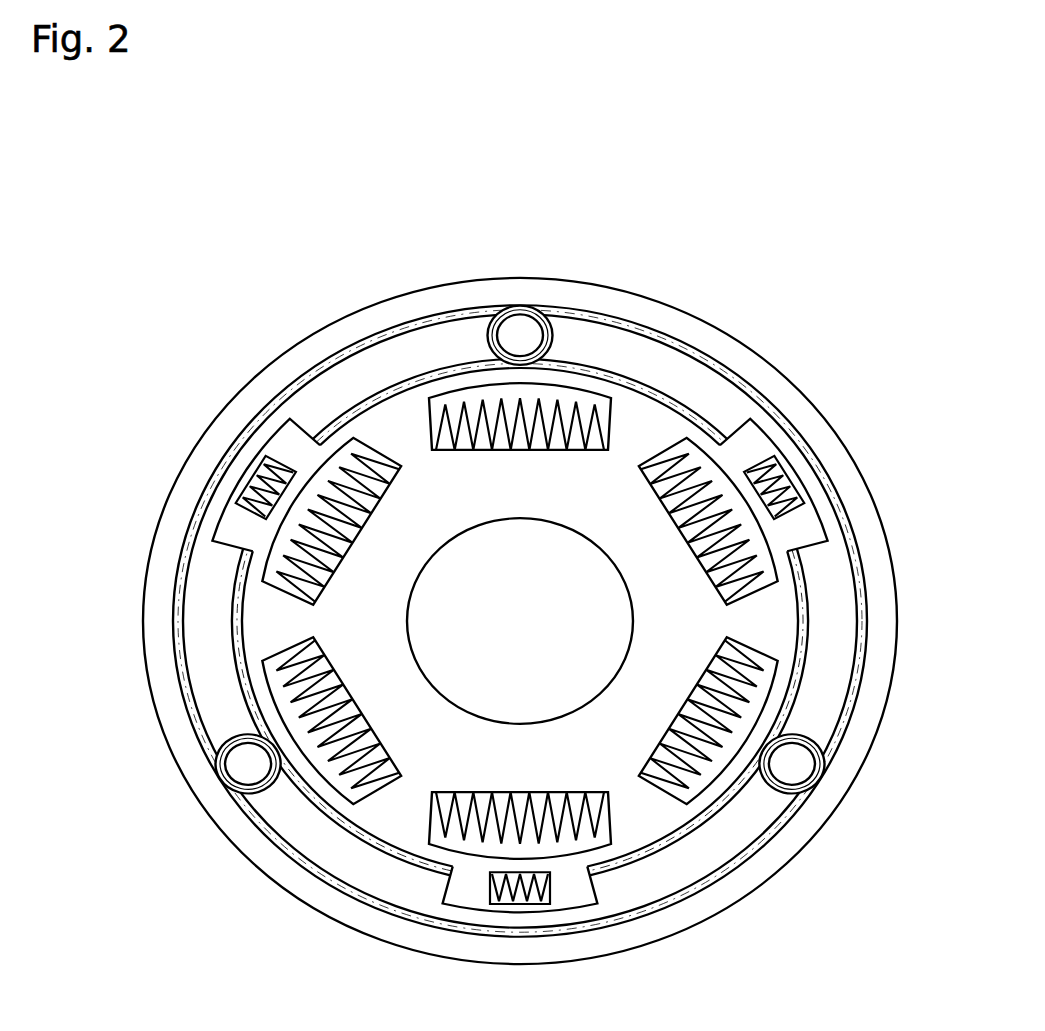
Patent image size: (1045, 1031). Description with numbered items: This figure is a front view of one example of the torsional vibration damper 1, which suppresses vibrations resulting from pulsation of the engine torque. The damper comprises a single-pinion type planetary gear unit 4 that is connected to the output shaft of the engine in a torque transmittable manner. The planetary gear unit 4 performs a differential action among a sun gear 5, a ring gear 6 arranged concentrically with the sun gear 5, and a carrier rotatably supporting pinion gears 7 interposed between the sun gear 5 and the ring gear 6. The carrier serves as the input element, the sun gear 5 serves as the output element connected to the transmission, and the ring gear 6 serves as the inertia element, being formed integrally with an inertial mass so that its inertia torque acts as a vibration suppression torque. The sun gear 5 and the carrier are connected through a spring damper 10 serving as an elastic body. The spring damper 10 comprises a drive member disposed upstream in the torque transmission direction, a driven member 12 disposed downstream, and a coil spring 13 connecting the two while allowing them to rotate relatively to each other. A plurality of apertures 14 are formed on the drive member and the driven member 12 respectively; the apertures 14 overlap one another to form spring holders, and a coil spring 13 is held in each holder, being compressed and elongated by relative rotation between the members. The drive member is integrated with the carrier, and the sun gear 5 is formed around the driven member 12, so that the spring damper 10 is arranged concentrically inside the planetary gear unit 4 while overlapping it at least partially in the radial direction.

The torsional vibration damper 1 is at (688, 220).
The single-pinion type planetary gear unit 4 is at (699, 311).
The sun gear 5 is at (455, 362).
The ring gear 6 is at (366, 333).
The pinion gears 7 is at (494, 338).
The spring damper 10 is at (523, 627).
The driven member 12 is at (418, 400).
The coil spring 13 is at (578, 408).
The apertures 14 is at (600, 398).